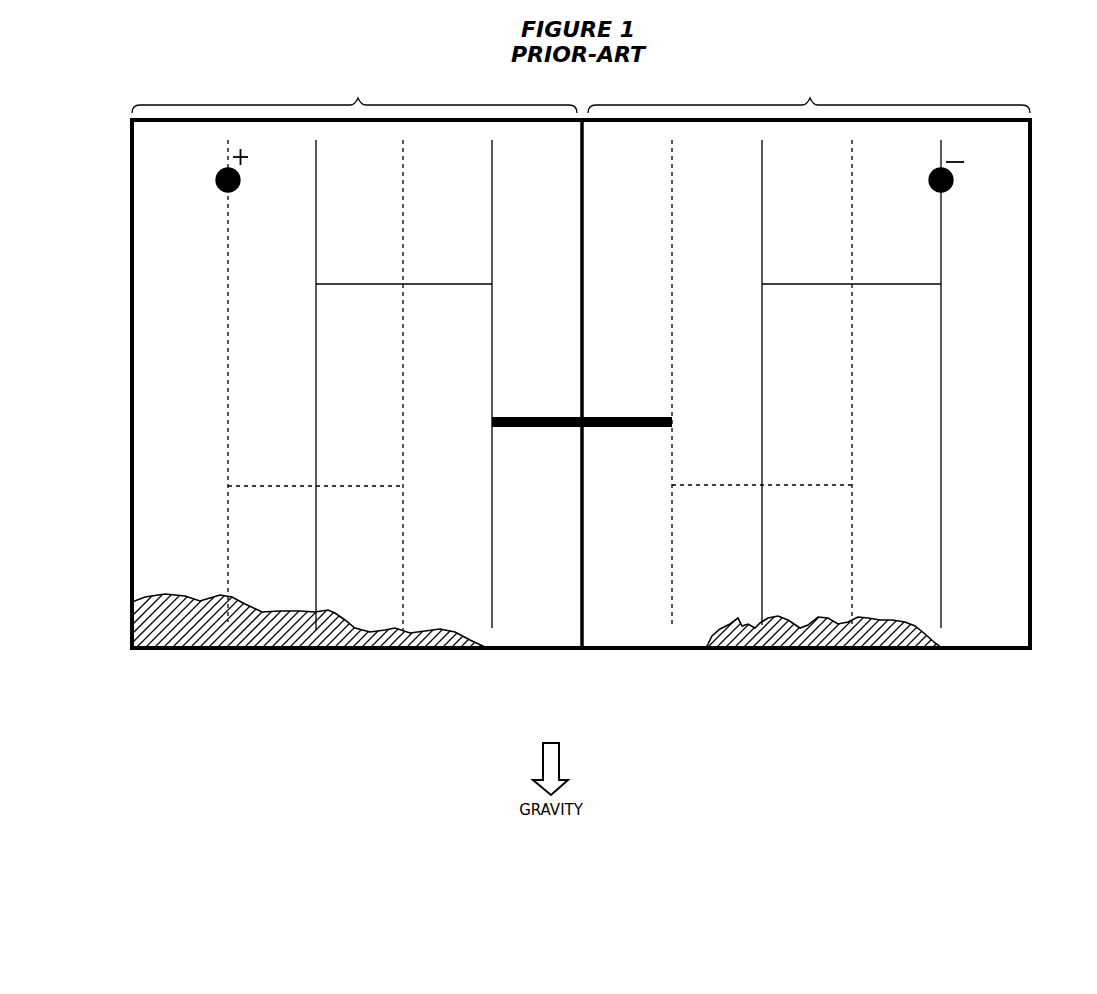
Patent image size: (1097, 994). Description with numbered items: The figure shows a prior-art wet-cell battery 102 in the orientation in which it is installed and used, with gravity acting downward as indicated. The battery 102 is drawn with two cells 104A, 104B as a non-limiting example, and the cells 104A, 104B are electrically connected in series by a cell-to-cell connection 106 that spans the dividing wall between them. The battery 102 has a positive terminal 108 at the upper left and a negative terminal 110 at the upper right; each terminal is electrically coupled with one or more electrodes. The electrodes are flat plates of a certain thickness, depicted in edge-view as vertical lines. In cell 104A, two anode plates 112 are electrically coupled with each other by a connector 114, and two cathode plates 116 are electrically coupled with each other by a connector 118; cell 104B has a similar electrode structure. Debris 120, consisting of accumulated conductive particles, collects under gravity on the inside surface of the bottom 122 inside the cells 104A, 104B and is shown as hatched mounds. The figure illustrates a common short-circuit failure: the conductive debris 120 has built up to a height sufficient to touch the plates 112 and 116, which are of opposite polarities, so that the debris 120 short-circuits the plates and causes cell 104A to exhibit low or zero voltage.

The battery 102 is at (132, 120).
The cell 104A is at (354, 95).
The cell 104B is at (809, 95).
The cell-to-cell connection 106 is at (562, 428).
The terminal 108 is at (216, 181).
The terminal 110 is at (953, 178).
The anode plates 112 is at (403, 369).
The connector 114 is at (285, 486).
The cathode plates 116 is at (492, 442).
The connector 118 is at (340, 284).
The debris 120 is at (541, 613).
The bottom 122 is at (527, 650).